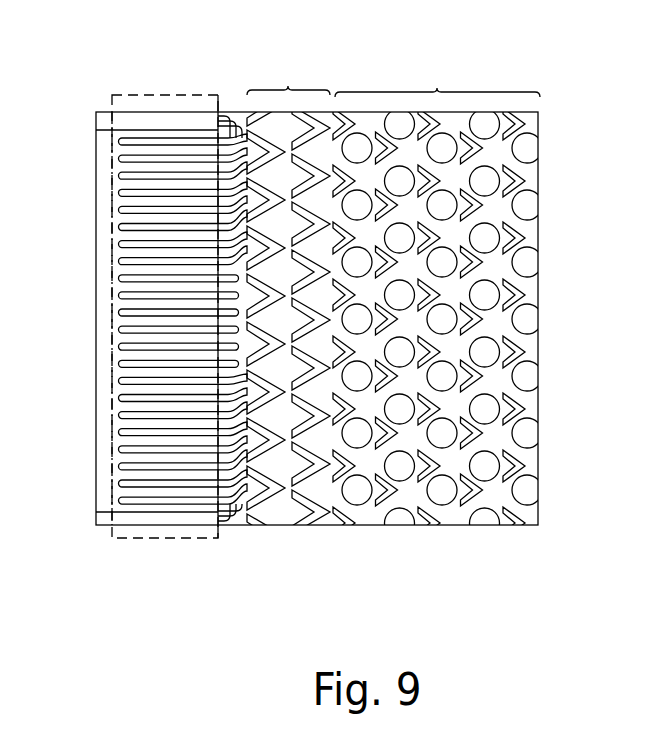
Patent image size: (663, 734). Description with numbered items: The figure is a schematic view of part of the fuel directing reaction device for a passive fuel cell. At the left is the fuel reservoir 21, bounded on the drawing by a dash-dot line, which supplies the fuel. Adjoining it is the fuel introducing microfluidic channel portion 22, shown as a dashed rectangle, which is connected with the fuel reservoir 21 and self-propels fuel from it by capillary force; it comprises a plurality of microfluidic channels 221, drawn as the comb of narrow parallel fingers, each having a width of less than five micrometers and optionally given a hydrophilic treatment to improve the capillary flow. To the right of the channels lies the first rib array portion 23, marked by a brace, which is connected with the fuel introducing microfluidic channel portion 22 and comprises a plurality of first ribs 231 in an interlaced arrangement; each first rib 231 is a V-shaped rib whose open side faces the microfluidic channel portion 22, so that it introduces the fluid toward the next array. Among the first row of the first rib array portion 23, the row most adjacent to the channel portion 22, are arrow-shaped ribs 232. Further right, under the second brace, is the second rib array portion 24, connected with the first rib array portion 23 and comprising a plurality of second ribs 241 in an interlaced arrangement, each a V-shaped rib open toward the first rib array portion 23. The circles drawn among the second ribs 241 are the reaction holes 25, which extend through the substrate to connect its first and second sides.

The fuel reservoir 21 is at (100, 400).
The fuel introducing microfluidic channel portion 22 is at (166, 95).
The microfluidic channels 221 is at (118, 288).
The first rib array portion 23 is at (288, 75).
The first ribs 231 is at (295, 525).
The arrow-shaped ribs 232 is at (262, 497).
The second rib array portion 24 is at (437, 76).
The second ribs 241 is at (420, 527).
The reaction holes 25 is at (530, 150).